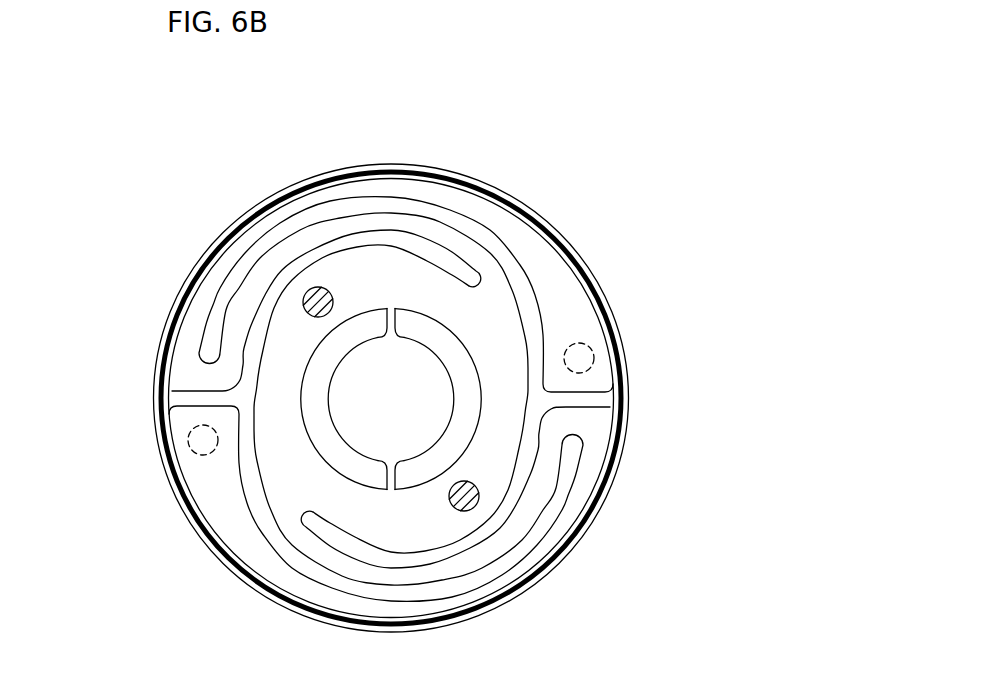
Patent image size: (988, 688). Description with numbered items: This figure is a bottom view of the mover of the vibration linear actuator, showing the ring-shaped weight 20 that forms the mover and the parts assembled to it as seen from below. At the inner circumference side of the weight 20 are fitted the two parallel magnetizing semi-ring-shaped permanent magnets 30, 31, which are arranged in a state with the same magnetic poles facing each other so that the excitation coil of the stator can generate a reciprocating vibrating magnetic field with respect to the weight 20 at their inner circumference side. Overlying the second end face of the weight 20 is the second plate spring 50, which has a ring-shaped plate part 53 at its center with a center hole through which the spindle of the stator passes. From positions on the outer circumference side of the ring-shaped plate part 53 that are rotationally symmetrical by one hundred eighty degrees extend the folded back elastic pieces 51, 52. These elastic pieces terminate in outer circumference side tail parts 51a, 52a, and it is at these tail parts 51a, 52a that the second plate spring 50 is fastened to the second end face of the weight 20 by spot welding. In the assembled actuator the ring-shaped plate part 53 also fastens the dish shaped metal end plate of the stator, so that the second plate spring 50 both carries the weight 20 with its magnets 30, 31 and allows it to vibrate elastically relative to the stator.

The ring-shaped weight 20 is at (586, 543).
The semi-ring-shaped permanent magnet 30 is at (312, 377).
The semi-ring-shaped permanent magnet 31 is at (453, 362).
The second plate spring 50 is at (548, 230).
The folded back elastic piece 51 is at (490, 598).
The outer circumference side tail part 51a is at (182, 428).
The folded back elastic piece 52 is at (285, 215).
The outer circumference side tail part 52a is at (603, 357).
The ring-shaped plate part 53 is at (407, 272).